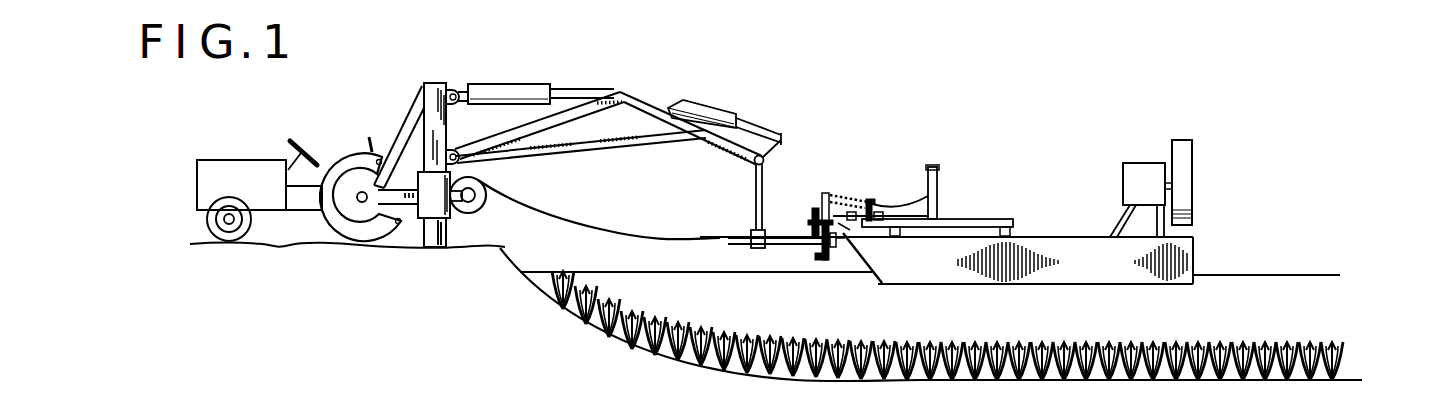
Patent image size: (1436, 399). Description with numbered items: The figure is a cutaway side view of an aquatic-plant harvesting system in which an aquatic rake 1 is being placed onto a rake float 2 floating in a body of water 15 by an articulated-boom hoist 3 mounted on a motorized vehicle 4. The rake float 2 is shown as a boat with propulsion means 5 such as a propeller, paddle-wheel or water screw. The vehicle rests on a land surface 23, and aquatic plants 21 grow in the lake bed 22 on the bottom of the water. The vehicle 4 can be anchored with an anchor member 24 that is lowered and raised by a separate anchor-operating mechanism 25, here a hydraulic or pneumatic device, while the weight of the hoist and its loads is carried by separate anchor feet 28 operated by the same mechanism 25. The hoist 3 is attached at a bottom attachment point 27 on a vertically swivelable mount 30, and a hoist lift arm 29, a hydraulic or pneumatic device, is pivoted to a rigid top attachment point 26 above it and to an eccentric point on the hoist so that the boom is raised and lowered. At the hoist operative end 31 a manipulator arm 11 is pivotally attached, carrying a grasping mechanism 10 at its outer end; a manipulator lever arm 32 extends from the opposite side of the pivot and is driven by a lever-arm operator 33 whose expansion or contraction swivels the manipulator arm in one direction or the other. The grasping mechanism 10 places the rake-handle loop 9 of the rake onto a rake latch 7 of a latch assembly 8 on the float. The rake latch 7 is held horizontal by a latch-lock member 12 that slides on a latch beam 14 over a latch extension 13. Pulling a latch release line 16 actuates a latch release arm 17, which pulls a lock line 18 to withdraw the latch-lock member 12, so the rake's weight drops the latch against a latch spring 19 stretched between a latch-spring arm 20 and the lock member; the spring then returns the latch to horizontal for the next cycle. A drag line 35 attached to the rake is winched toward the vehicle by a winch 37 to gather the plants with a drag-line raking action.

The aquatic rake 1 is at (820, 250).
The rake float 2 is at (844, 226).
The articulated-boom hoist 3 is at (697, 68).
The motorized vehicle 4 is at (237, 160).
The propulsion means 5 is at (1154, 118).
The rake latch 7 is at (813, 222).
The latch assembly 8 is at (960, 170).
The rake-handle loop 9 is at (818, 238).
The grasping mechanism 10 is at (752, 240).
The manipulator arm 11 is at (755, 200).
The latch-lock member 12 is at (890, 233).
The latch extension 13 is at (872, 242).
The latch beam 14 is at (953, 227).
The body of water 15 is at (1082, 325).
The latch release line 16 is at (940, 170).
The latch release arm 17 is at (940, 168).
The lock line 18 is at (938, 166).
The latch spring 19 is at (867, 197).
The latch-spring arm 20 is at (833, 198).
The aquatic plants 21 is at (1113, 345).
The lake bed 22 is at (1207, 378).
The land surface 23 is at (275, 246).
The anchor member 24 is at (437, 250).
The anchor-operating mechanism 25 is at (454, 243).
The top attachment point 26 is at (424, 88).
The bottom attachment point 27 is at (396, 140).
The anchor feet 28 is at (420, 248).
The hoist lift arm 29 is at (518, 83).
The vertically swivelable mount 30 is at (480, 153).
The articulated-boom hoist operative end 31 is at (748, 166).
The manipulator lever arm 32 is at (810, 226).
The lever-arm operator 33 is at (720, 112).
The drag line 35 is at (626, 237).
The winch 37 is at (484, 212).